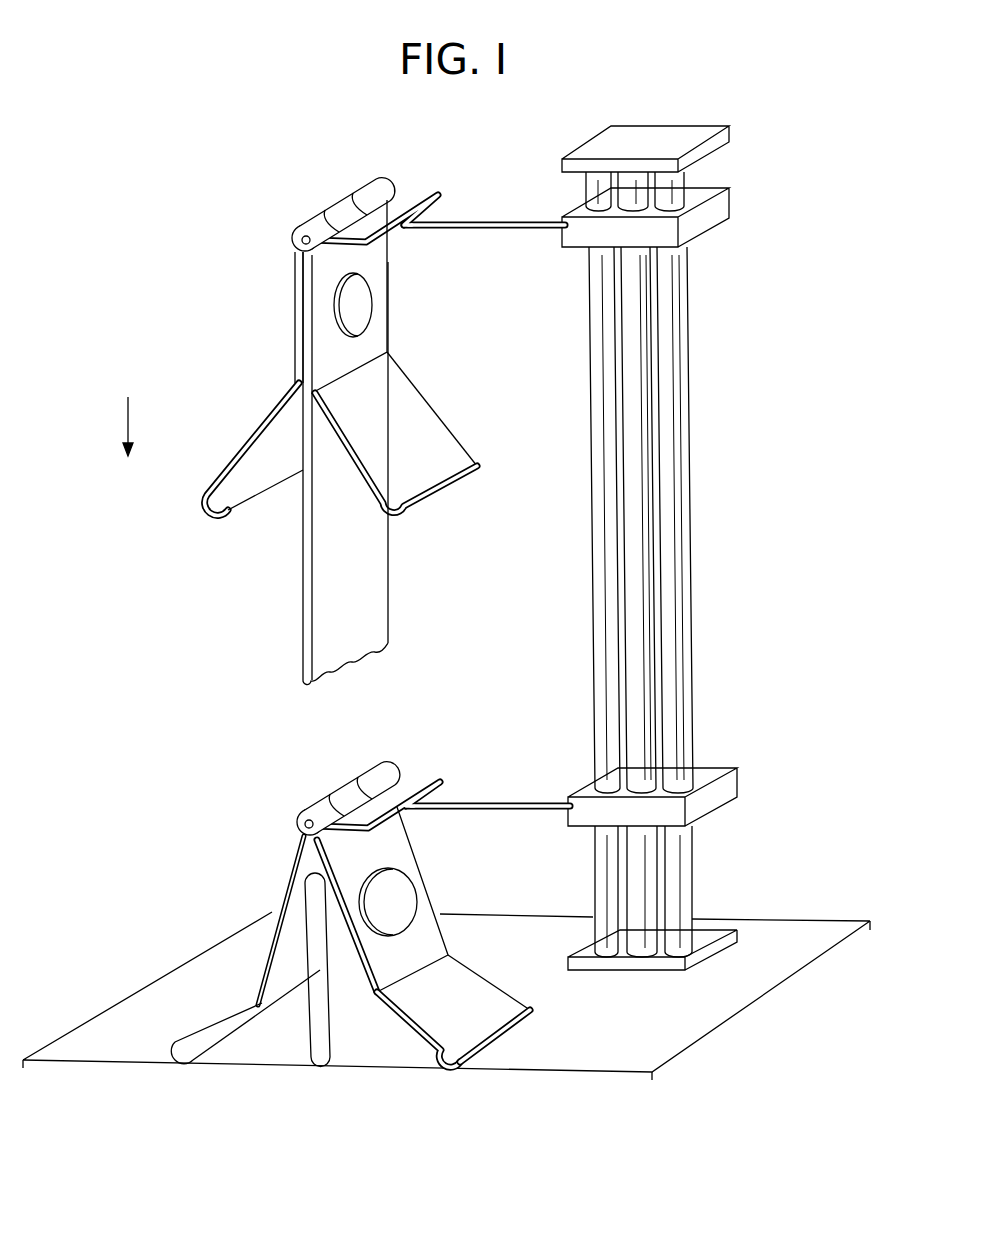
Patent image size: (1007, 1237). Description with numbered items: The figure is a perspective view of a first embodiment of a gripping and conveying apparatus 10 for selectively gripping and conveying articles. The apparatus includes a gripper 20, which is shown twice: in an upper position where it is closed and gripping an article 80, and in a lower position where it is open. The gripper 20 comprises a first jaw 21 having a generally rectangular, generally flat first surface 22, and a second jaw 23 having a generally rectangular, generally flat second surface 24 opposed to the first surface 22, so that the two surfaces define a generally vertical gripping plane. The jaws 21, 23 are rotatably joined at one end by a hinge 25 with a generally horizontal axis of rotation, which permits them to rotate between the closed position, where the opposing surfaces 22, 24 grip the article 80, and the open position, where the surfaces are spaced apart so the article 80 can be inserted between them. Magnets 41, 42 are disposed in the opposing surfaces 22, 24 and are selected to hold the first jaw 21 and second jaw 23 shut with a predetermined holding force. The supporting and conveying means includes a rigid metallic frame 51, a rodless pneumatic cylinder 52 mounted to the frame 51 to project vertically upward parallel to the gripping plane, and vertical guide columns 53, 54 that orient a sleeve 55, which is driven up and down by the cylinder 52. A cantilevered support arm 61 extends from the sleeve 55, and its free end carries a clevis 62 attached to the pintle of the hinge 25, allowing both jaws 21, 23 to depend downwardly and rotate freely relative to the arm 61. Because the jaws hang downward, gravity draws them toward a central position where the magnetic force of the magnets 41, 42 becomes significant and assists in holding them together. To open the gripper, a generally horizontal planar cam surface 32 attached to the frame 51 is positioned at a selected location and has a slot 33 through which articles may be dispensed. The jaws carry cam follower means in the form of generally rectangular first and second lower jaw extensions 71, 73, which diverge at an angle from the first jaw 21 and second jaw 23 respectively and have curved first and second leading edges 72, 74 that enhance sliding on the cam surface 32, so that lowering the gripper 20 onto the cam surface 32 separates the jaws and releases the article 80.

The gripping and conveying apparatus 10 is at (206, 167).
The gripper 20 is at (272, 292).
The first jaw 21 is at (278, 392).
The first surface 22 is at (298, 354).
The second jaw 23 is at (390, 352).
The second surface 24 is at (322, 272).
The hinge 25 is at (368, 185).
The cam surface 32 is at (163, 1009).
The slot 33 is at (362, 1040).
The magnet 41 is at (303, 884).
The magnet 42 is at (368, 300).
The frame 51 is at (620, 972).
The rodless pneumatic cylinder 52 is at (633, 352).
The vertical guide column 53 is at (690, 512).
The vertical guide column 54 is at (592, 472).
The sleeve 55 is at (708, 228).
The cantilevered support arm 61 is at (516, 205).
The clevis 62 is at (433, 187).
The first lower jaw extension 71 is at (262, 1005).
The first leading edge 72 is at (205, 1015).
The second lower jaw extension 73 is at (458, 990).
The second leading edge 74 is at (512, 1050).
The article 80 is at (327, 558).